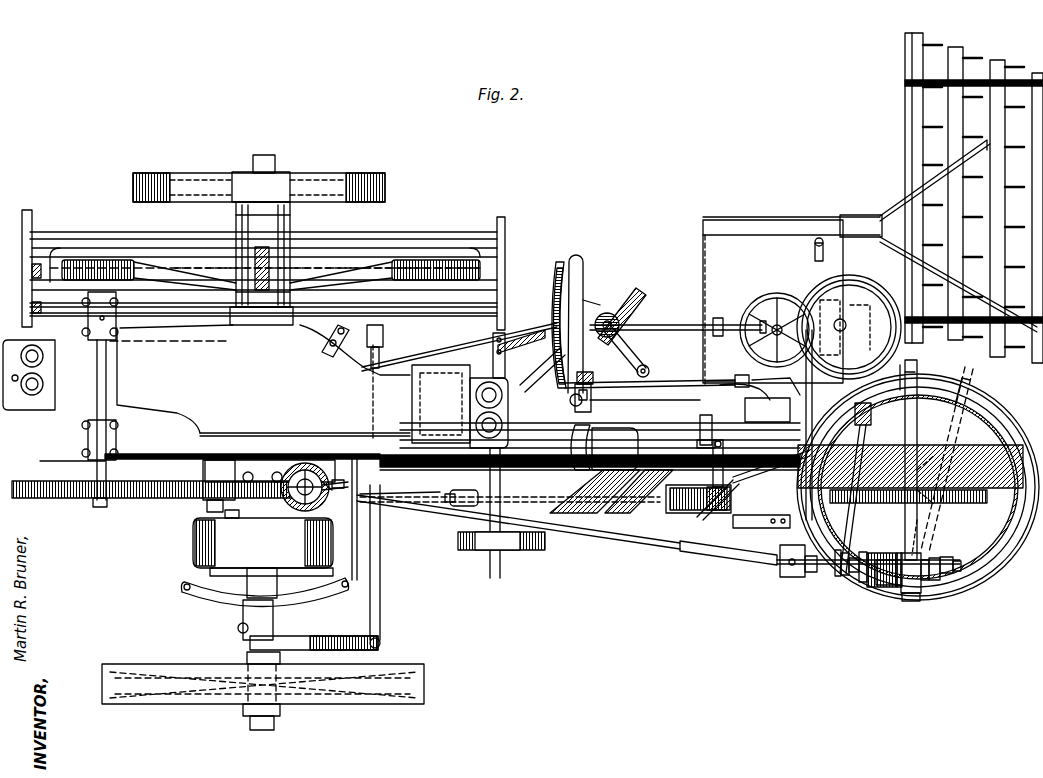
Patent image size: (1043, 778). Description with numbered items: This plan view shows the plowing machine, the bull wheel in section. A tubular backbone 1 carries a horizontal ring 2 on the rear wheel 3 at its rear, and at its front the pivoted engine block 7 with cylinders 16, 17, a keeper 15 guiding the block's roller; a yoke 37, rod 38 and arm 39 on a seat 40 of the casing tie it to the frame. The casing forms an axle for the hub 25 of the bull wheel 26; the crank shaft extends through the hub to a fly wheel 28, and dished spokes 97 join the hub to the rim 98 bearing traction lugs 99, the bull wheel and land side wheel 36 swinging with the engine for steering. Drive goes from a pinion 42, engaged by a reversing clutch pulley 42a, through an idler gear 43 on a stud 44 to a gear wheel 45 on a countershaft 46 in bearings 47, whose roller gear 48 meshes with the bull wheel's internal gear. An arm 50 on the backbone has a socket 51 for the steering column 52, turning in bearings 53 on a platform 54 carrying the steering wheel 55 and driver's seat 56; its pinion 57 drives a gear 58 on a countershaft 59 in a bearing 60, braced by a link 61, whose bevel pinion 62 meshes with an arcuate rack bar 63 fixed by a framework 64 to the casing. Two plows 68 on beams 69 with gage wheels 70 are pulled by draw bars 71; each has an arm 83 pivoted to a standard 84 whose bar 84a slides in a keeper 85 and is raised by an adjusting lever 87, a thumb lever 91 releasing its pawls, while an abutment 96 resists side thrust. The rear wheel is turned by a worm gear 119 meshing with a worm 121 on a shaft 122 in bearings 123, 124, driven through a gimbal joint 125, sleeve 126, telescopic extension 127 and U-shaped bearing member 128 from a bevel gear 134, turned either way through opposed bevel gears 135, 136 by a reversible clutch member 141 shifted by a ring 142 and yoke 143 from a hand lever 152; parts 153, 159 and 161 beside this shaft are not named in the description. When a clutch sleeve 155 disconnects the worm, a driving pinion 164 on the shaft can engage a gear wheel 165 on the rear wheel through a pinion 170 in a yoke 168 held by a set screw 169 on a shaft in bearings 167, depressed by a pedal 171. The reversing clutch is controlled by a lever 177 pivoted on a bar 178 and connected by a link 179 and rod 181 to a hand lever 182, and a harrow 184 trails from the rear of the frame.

The central longitudinal member 1 is at (650, 400).
The ring 2 is at (990, 550).
The rear wheel 3 is at (955, 386).
The engine block 7 is at (263, 379).
The keeper 15 is at (305, 595).
The cylinder 16 is at (70, 400).
The cylinder 17 is at (460, 406).
The hub 25 is at (290, 225).
The bull wheel 26 is at (378, 238).
The fly wheel 28 is at (200, 177).
The land side wheel 36 is at (425, 682).
The yoke 37 is at (345, 630).
The rod 38 is at (380, 600).
The arm 39 is at (367, 332).
The seat 40 is at (333, 357).
The pinion 42 is at (285, 462).
The reversing clutch pulley 42a is at (193, 544).
The idler gear 43 is at (203, 475).
The stud 44 is at (207, 506).
The gear wheel 45 is at (72, 498).
The countershaft 46 is at (97, 368).
The bearings 47 is at (88, 322).
The roller gear 48 is at (80, 260).
The arm 50 is at (582, 262).
The socket 51 is at (590, 300).
The steering column 52 is at (675, 325).
The bearings 53 is at (715, 318).
The platform 54 is at (718, 248).
The steering wheel 55 is at (762, 295).
The driver's seat 56 is at (882, 300).
The pinion 57 is at (615, 305).
The gear 58 is at (630, 356).
The countershaft 59 is at (649, 371).
The bearing 60 is at (591, 395).
The link 61 is at (620, 330).
The bevel pinion 62 is at (541, 370).
The arcuate rack bar 63 is at (555, 262).
The framework 64 is at (422, 357).
The plows 68 is at (505, 345).
The beam 69 is at (528, 496).
The gage wheel 70 is at (470, 550).
The draw bar 71 is at (450, 494).
The arm 83 is at (700, 517).
The supporting standard 84 is at (728, 565).
The bar 84a is at (660, 470).
The keeper 85 is at (577, 383).
The adjusting lever 87 is at (620, 384).
The thumb lever 91 is at (735, 375).
The abutment 96 is at (755, 528).
The spokes 97 is at (395, 270).
The rim 98 is at (32, 268).
The traction lugs 99 is at (28, 212).
The worm gear 119 is at (950, 570).
The worm 121 is at (898, 588).
The shaft 122 is at (843, 575).
The bearing 123 is at (958, 571).
The bearing 124 is at (836, 576).
The gimbal joint 125 is at (785, 577).
The sleeve 126 is at (700, 553).
The telescopic extension 127 is at (600, 534).
The bearing member 128 is at (357, 522).
The bevel gear 134 is at (295, 502).
The bevel gear 135 is at (303, 511).
The bevel gear 136 is at (310, 465).
The reversible clutch member 141 is at (306, 463).
The ring 142 is at (290, 440).
The yoke 143 is at (332, 478).
The hand lever 152 is at (763, 430).
The collar 153 is at (862, 582).
The clutch sleeve 155 is at (878, 555).
The spring 159 is at (875, 590).
The collar 161 is at (852, 575).
The driving pinion 164 is at (934, 580).
The gear wheel 165 is at (935, 505).
The bearings 167 is at (810, 572).
The yoke 168 is at (905, 556).
The set screw 169 is at (910, 601).
The pinion 170 is at (920, 545).
The pedal 171 is at (866, 430).
The lever 177 is at (230, 572).
The bar 178 is at (357, 554).
The link 179 is at (228, 518).
The rod 181 is at (700, 430).
The hand lever 182 is at (815, 250).
The harrow 184 is at (905, 153).